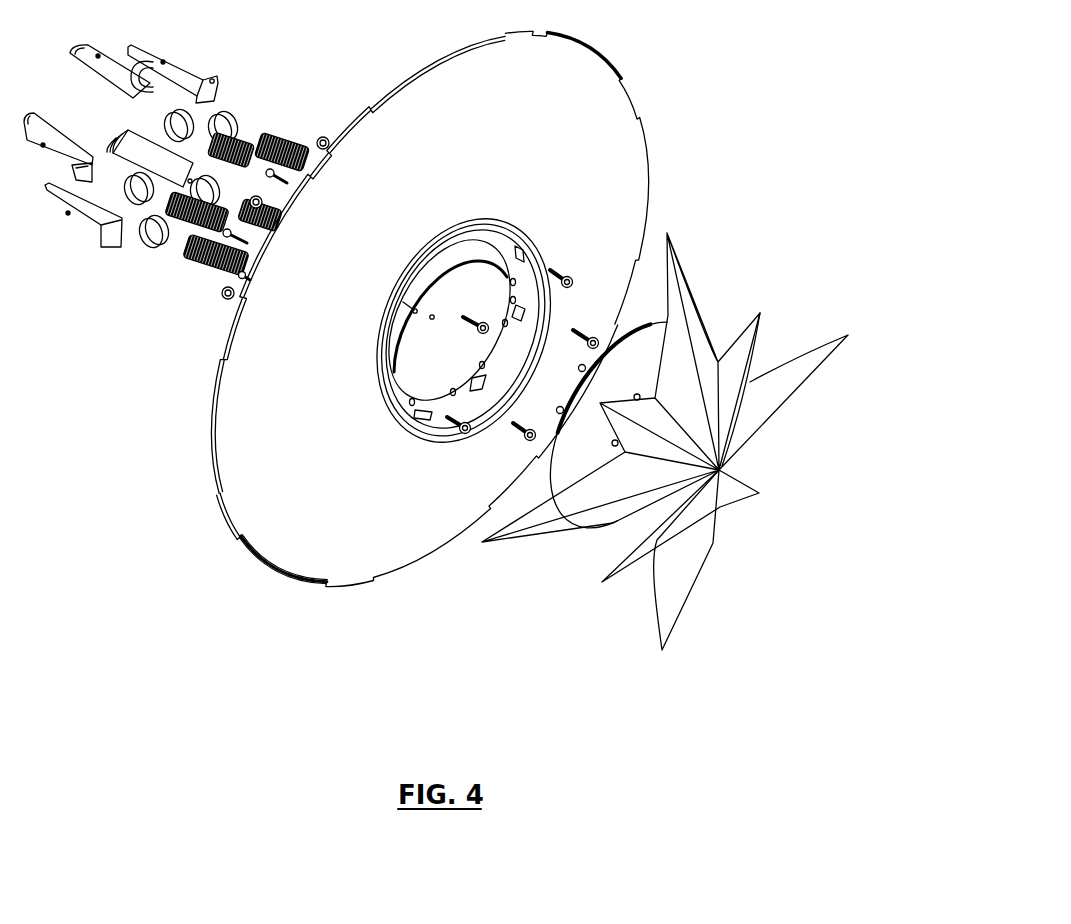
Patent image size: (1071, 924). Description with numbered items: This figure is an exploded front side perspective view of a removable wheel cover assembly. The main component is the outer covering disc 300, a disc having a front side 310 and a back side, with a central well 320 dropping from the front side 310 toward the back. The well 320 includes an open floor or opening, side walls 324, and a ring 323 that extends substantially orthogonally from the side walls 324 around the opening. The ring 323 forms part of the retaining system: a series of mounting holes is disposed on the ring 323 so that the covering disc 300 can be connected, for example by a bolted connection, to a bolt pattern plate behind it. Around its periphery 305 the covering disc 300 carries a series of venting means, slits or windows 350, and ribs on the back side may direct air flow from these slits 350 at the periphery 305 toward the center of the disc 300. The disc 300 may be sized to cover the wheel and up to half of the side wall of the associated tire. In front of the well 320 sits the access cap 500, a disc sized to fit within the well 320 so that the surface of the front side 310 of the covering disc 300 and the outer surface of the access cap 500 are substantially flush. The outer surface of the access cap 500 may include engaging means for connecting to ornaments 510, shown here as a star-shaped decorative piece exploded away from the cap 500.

The outer covering disc 300 is at (633, 182).
The periphery 305 is at (440, 553).
The front side 310 is at (313, 523).
The central well 320 is at (380, 380).
The ring 323 is at (500, 237).
The side walls 324 is at (523, 278).
The venting slits 350 is at (224, 517).
The access cap 500 is at (630, 352).
The ornaments 510 is at (693, 473).